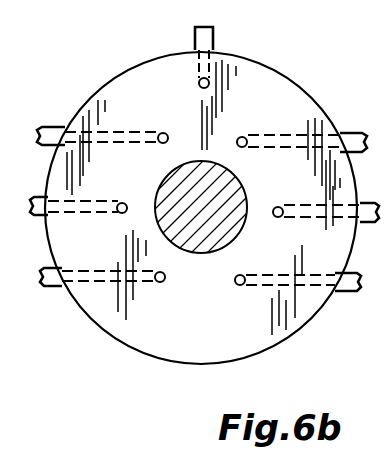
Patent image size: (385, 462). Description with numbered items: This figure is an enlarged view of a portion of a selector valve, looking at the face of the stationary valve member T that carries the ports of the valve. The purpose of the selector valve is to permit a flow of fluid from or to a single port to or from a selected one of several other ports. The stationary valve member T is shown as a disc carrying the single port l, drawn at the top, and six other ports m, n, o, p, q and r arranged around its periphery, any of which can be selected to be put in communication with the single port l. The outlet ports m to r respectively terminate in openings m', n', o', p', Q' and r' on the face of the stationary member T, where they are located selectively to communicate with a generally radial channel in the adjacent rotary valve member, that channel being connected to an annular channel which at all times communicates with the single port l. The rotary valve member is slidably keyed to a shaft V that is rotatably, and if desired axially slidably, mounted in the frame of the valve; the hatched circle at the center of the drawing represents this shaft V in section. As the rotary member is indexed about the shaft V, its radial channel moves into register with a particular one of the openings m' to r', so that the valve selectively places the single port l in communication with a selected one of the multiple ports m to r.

The stationary valve member T is at (163, 56).
The single port l is at (213, 35).
The outlet port m is at (88, 275).
The outlet port n is at (63, 213).
The outlet port o is at (89, 147).
The outlet port p is at (316, 159).
The outlet port q is at (334, 195).
The outlet port r is at (314, 290).
The port opening m' is at (169, 290).
The port opening n' is at (126, 194).
The port opening o' is at (159, 122).
The port opening p' is at (252, 127).
The port opening Q' is at (288, 199).
The port opening r' is at (248, 293).
The shaft V is at (7, 123).